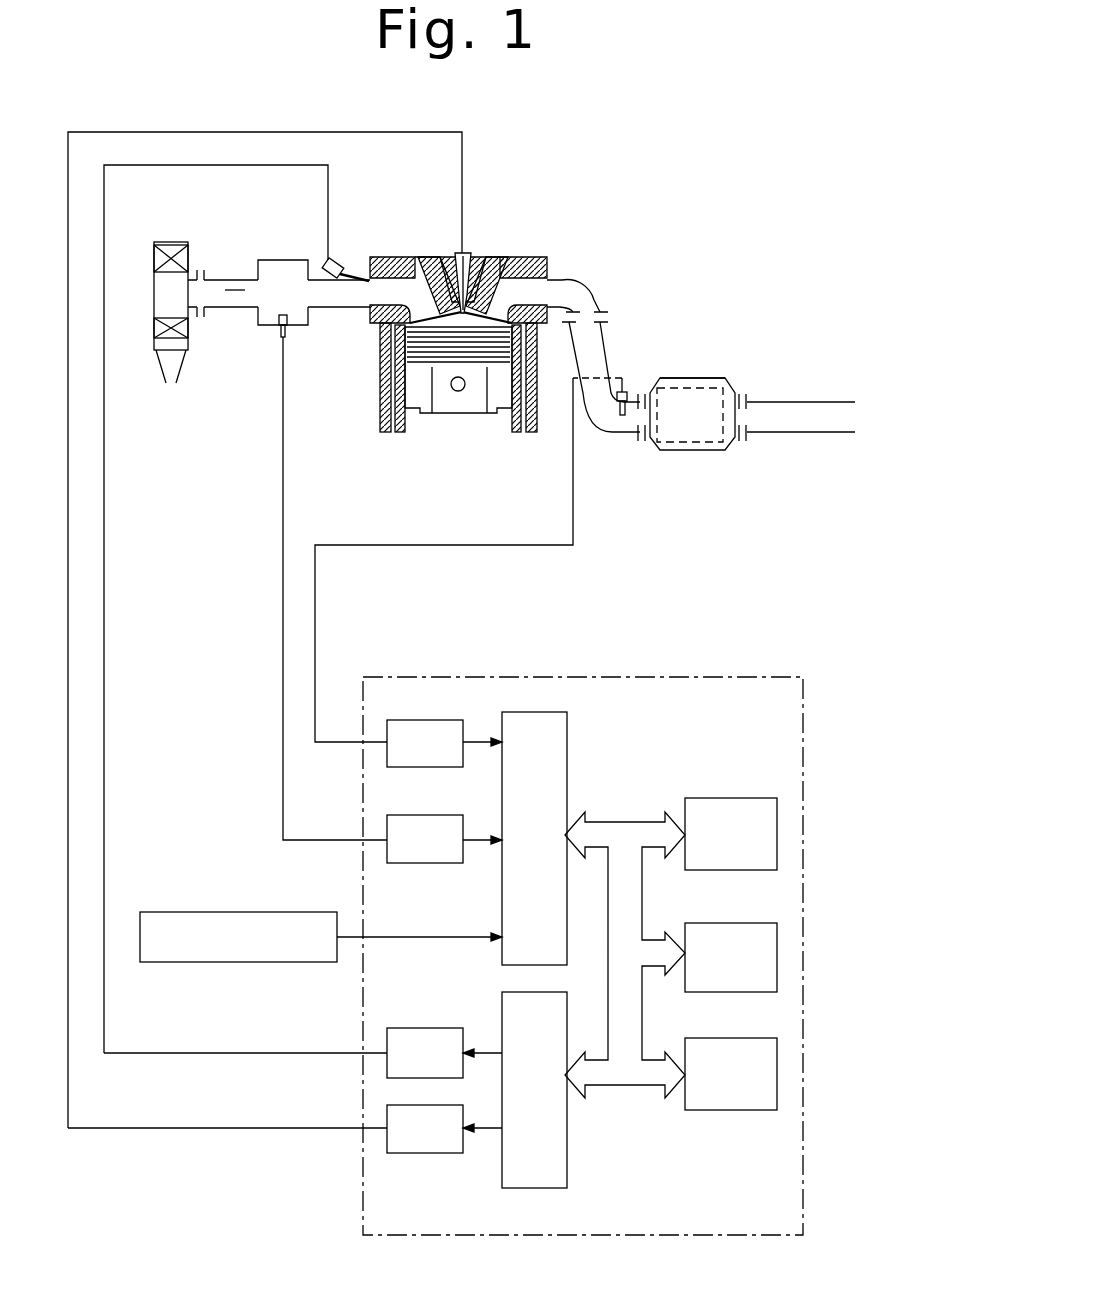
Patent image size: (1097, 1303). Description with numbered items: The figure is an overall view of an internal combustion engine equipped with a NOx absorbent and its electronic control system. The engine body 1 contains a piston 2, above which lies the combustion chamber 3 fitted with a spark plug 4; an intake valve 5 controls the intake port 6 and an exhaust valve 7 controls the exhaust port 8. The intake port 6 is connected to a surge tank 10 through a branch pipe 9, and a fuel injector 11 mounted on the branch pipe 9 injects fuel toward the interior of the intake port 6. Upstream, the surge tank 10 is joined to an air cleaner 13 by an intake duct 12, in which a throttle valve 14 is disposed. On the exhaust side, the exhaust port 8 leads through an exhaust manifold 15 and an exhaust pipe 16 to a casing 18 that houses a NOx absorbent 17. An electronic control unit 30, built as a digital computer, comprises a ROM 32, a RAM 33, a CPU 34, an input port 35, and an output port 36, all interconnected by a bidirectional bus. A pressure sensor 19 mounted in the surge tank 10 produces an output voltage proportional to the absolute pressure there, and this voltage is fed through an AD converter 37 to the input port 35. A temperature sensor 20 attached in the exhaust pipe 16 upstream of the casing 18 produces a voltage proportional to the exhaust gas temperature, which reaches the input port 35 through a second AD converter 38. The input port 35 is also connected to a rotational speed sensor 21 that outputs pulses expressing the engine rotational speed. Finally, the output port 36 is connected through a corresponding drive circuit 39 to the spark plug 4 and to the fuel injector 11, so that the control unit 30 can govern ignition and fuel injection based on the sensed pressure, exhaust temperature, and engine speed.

The engine body 1 is at (540, 423).
The piston 2 is at (477, 405).
The combustion chamber 3 is at (437, 407).
The spark plug 4 is at (468, 253).
The intake valve 5 is at (418, 253).
The intake port 6 is at (389, 287).
The exhaust valve 7 is at (507, 255).
The exhaust port 8 is at (566, 275).
The branch pipe 9 is at (337, 310).
The surge tank 10 is at (293, 260).
The fuel injector 11 is at (336, 260).
The intake duct 12 is at (216, 278).
The air cleaner 13 is at (175, 242).
The throttle valve 14 is at (236, 290).
The exhaust manifold 15 is at (600, 293).
The exhaust pipe 16 is at (602, 345).
The NOx absorbent 17 is at (728, 378).
The casing 18 is at (697, 452).
The pressure sensor 19 is at (278, 338).
The temperature sensor 20 is at (628, 390).
The rotational speed sensor 21 is at (228, 912).
The electronic control unit 30 is at (805, 722).
The ROM 32 is at (745, 798).
The RAM 33 is at (748, 923).
The CPU 34 is at (748, 1038).
The input port 35 is at (567, 740).
The output port 36 is at (567, 1170).
The AD converter 37 is at (430, 815).
The AD converter 38 is at (430, 720).
The drive circuit 39 is at (435, 1028).